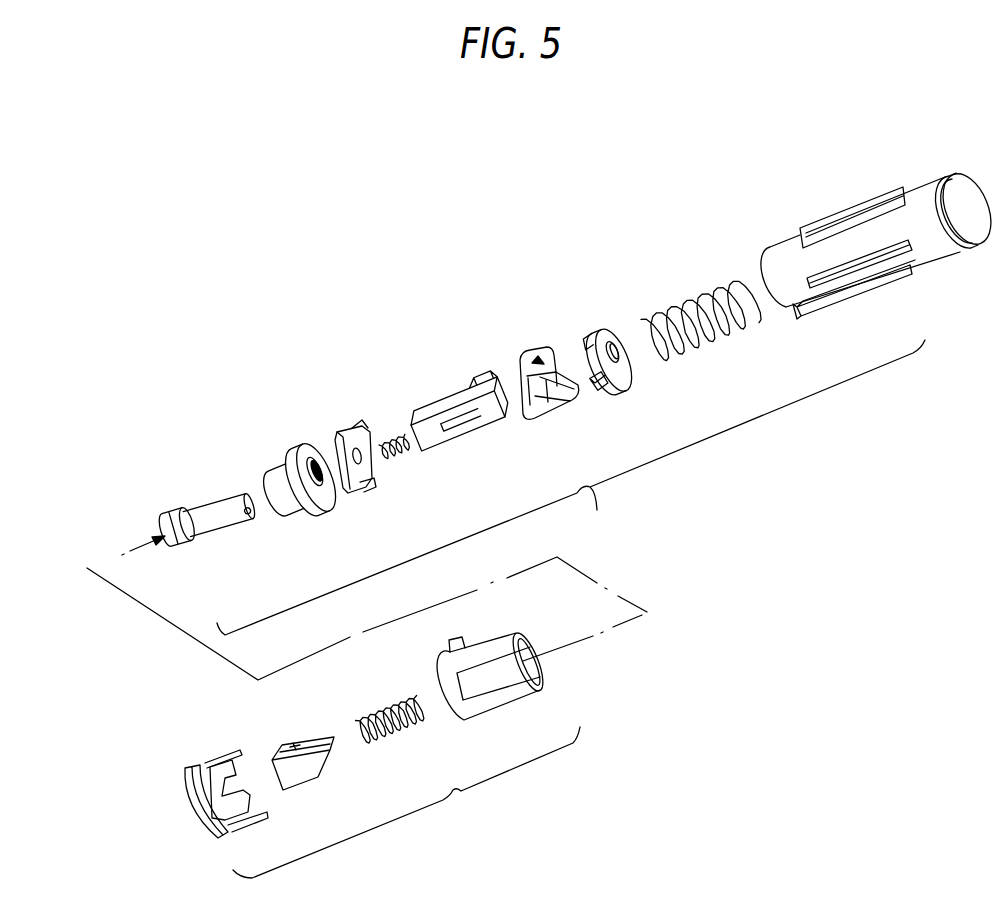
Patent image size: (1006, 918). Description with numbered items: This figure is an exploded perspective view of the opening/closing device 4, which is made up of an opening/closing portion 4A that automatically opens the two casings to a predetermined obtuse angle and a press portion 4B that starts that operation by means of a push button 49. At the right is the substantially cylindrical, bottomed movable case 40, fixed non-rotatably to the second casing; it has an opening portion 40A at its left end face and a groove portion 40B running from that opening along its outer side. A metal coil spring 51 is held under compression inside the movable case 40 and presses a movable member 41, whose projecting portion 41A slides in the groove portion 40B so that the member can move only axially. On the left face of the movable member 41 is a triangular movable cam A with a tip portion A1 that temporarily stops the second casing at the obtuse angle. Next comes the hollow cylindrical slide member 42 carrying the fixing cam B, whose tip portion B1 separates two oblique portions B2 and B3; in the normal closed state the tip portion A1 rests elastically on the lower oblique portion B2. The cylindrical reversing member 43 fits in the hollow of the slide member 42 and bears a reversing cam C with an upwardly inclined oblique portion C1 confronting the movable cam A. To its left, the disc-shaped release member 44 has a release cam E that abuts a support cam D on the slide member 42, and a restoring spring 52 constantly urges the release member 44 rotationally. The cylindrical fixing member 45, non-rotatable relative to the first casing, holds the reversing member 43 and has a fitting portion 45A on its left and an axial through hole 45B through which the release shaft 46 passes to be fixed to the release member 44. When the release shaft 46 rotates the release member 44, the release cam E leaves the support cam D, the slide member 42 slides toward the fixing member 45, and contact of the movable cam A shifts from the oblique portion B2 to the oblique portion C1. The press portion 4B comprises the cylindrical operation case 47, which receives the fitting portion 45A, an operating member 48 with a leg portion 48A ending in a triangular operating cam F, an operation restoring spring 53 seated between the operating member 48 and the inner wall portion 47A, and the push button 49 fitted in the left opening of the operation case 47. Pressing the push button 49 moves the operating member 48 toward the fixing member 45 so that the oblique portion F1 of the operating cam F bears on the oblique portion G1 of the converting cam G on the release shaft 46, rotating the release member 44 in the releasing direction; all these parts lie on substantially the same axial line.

The opening/closing device 4 is at (721, 602).
The opening/closing portion 4A is at (618, 545).
The press portion 4B is at (475, 842).
The movable case 40 is at (872, 239).
The opening portion 40A is at (856, 237).
The groove portion 40B is at (854, 289).
The movable member 41 is at (657, 319).
The projecting portion 41A is at (599, 381).
The slide member 42 is at (523, 357).
The reversing member 43 is at (455, 376).
The release member 44 is at (337, 433).
The fixing member 45 is at (274, 429).
The fitting portion 45A is at (281, 492).
The through hole 45B is at (315, 471).
The release shaft 46 is at (179, 478).
The operation case 47 is at (477, 654).
The wall portion 47A is at (514, 630).
The operating member 48 is at (282, 729).
The leg portion 48A is at (280, 752).
The push button 49 is at (192, 767).
The spring 51 is at (693, 300).
The restoring spring 52 is at (398, 458).
The operation restoring spring 53 is at (397, 700).
The movable cam A is at (598, 375).
The tip portion A1 is at (598, 330).
The fixing cam B is at (523, 357).
The tip portion B1 is at (573, 345).
The oblique portion B2 is at (570, 410).
The oblique portion B3 is at (540, 360).
The reversing cam C is at (500, 422).
The oblique portion C1 is at (481, 378).
The support cam D is at (531, 420).
The release cam E is at (365, 499).
The operating cam F is at (320, 773).
The oblique portion F1 is at (321, 773).
The converting cam G is at (177, 498).
The oblique portion G1 is at (214, 508).